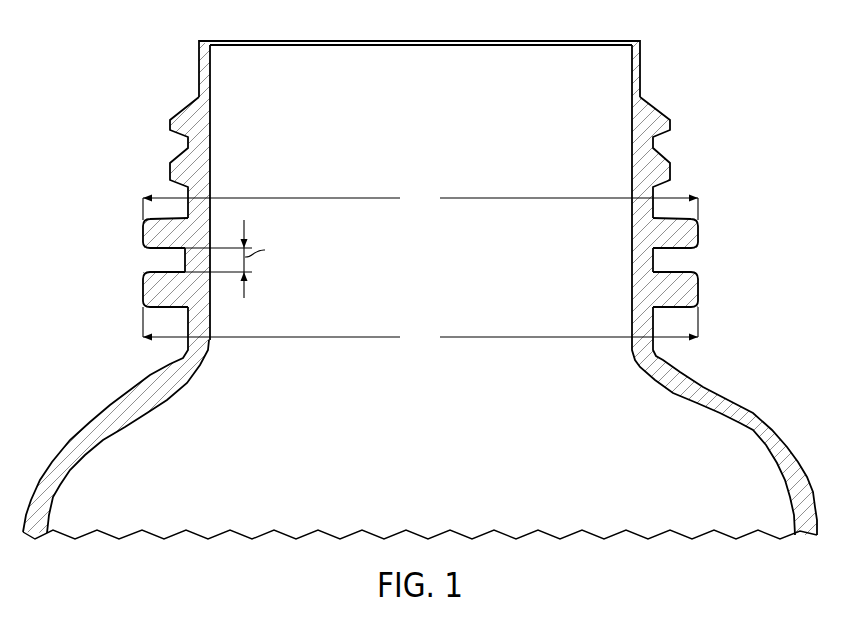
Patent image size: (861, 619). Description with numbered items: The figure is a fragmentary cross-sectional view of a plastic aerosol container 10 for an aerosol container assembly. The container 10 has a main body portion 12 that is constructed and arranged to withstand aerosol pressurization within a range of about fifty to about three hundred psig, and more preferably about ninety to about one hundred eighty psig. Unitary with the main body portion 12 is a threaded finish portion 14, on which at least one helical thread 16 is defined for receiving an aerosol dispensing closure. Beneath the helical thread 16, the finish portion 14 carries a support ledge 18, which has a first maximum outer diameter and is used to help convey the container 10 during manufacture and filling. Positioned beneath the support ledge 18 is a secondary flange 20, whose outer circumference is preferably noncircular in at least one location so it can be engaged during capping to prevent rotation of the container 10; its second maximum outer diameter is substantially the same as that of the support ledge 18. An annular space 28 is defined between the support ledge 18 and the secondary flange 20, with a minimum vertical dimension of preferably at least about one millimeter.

The plastic aerosol container 10 is at (430, 309).
The main body portion 12 is at (792, 426).
The threaded finish portion 14 is at (676, 91).
The helical thread 16 is at (662, 157).
The support ledge 18 is at (683, 214).
The secondary flange 20 is at (143, 294).
The annular space 28 is at (145, 260).